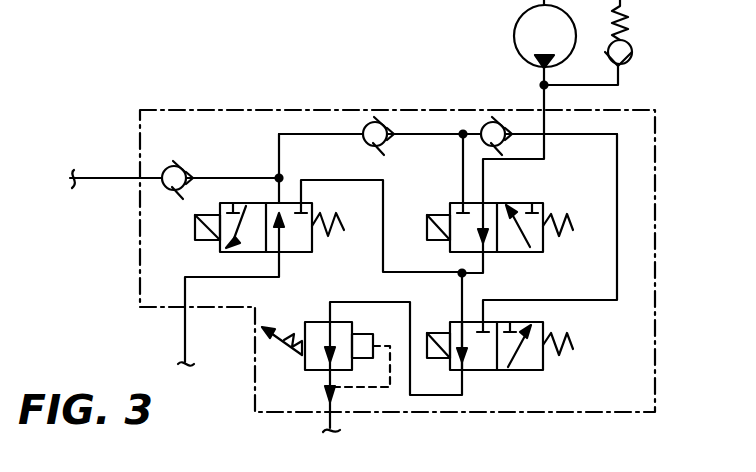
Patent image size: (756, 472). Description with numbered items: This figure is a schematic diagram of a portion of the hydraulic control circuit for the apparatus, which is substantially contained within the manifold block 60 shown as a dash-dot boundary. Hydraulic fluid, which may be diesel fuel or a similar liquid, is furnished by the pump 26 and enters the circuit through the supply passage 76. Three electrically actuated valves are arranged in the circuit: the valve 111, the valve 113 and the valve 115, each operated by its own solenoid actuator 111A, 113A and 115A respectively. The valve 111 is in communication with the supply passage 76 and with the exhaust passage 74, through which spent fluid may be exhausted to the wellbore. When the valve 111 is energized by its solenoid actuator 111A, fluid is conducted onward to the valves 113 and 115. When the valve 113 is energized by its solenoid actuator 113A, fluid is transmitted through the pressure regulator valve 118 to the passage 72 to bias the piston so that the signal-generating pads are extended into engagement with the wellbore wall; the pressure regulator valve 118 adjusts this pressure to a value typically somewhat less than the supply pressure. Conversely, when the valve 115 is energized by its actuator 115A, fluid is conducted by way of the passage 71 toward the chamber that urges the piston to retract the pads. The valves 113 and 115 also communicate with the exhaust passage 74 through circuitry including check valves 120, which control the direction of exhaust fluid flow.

The pump 26 is at (515, 33).
The supply passage 76 is at (540, 100).
The check valves 120 is at (184, 166).
The exhaust passage 74 is at (103, 181).
The manifold block 60 is at (657, 183).
The electrically actuated valve 115 is at (238, 203).
The solenoid actuator 115A is at (205, 241).
The electrically actuated valve 111 is at (528, 203).
The solenoid actuator 111A is at (443, 203).
The electrically actuated valve 113 is at (530, 371).
The solenoid actuator 113A is at (440, 331).
The pressure regulator valve 118 is at (318, 320).
The passage 71 is at (185, 330).
The passage 72 is at (340, 430).